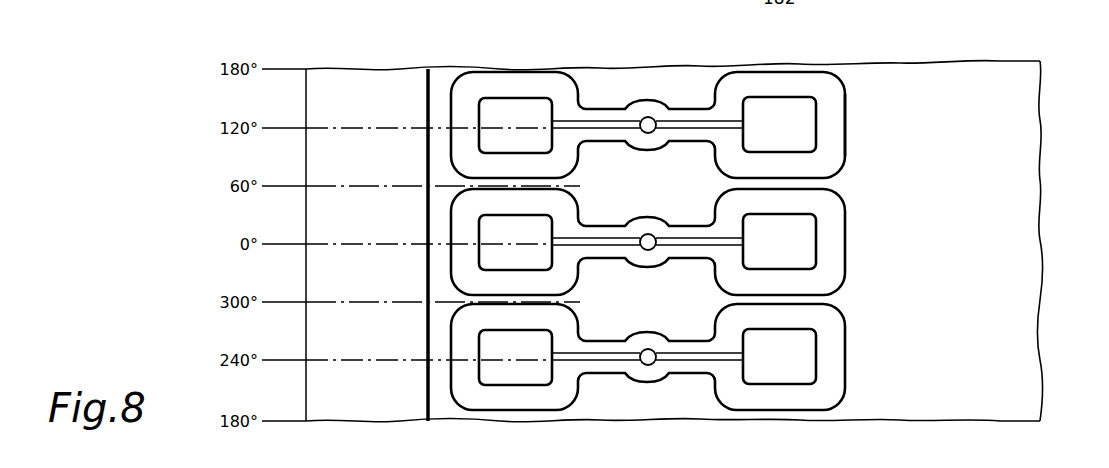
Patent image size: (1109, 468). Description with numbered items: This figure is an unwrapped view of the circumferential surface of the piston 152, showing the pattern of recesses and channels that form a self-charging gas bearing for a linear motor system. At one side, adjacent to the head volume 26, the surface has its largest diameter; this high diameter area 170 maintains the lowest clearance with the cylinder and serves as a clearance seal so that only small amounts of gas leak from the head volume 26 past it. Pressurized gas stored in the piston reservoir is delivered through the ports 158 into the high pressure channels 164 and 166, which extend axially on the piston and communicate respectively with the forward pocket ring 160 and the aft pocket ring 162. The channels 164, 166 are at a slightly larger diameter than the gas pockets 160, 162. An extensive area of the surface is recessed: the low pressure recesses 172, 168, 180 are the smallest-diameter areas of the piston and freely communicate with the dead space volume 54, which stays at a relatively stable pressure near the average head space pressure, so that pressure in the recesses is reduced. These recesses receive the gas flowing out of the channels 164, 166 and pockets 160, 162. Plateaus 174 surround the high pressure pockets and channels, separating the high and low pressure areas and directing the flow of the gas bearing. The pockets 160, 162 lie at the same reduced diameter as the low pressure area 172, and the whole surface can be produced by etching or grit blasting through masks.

The head volume 26 is at (220, 41).
The dead space volume 54 is at (1094, 266).
The piston 152 is at (1028, 184).
The ports 158 is at (646, 116).
The forward pocket ring 160 is at (510, 115).
The aft pocket ring 162 is at (788, 117).
The high pressure channel 164 is at (590, 112).
The high pressure channel 166 is at (698, 123).
The low pressure recess 168 is at (827, 178).
The high diameter area 170 is at (395, 395).
The low pressure recess 172 is at (987, 125).
The plateaus 174 is at (560, 397).
The low pressure recess 180 is at (438, 80).